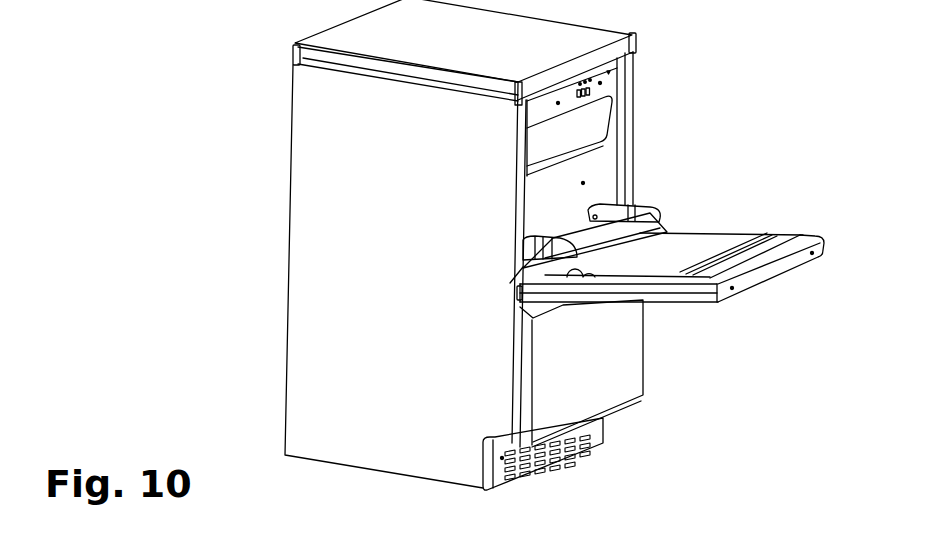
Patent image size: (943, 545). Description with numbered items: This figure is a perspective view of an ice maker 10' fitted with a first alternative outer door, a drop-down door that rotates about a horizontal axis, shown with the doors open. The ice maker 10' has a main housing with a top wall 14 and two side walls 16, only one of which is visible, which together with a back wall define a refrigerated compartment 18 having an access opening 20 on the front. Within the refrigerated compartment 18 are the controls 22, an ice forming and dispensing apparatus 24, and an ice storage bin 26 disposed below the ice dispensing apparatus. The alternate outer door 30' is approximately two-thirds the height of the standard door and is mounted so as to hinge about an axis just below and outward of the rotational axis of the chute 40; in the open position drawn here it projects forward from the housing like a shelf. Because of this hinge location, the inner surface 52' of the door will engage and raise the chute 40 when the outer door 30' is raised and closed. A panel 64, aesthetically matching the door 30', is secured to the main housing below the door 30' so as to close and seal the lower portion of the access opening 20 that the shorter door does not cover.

The ice maker 10' is at (640, 253).
The top wall 14 is at (423, 49).
The side wall 16 is at (368, 167).
The refrigerated compartment 18 is at (533, 186).
The access opening 20 is at (561, 214).
The controls 22 is at (547, 105).
The ice forming and dispensing apparatus 24 is at (542, 145).
The ice storage bin 26 is at (585, 203).
The alternate outer door 30' is at (679, 278).
The chute 40 is at (607, 237).
The inner surface 52' is at (739, 211).
The panel 64 is at (610, 355).